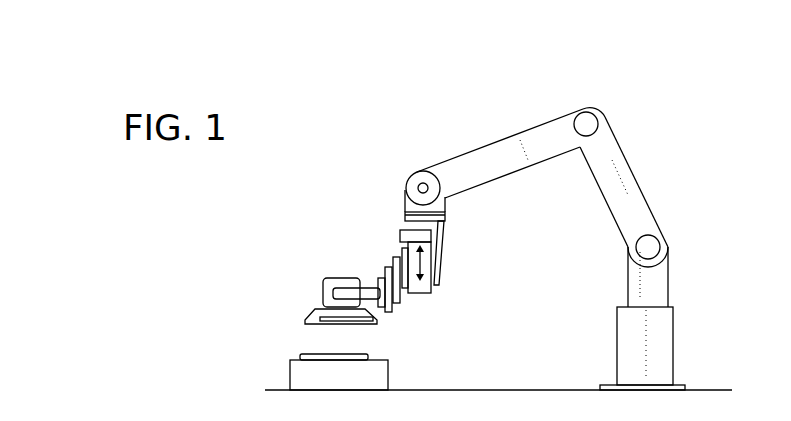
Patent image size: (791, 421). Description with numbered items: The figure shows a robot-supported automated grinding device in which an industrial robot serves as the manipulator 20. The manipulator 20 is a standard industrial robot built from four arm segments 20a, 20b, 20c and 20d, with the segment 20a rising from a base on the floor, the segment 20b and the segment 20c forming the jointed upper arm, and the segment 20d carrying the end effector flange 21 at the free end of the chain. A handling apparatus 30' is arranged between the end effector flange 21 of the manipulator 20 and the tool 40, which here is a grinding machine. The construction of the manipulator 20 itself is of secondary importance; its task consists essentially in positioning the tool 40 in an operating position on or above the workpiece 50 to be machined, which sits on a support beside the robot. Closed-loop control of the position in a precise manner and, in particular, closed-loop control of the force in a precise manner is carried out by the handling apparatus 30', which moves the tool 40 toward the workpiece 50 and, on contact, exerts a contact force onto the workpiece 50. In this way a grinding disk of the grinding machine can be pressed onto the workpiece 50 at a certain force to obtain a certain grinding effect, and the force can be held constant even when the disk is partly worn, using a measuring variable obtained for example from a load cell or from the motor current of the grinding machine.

The manipulator 20 is at (428, 151).
The arm segment 20a is at (657, 282).
The arm segment 20b is at (638, 200).
The arm segment 20c is at (552, 124).
The arm segment 20d is at (445, 203).
The end effector flange 21 is at (405, 214).
The handling apparatus 30' is at (478, 273).
The tool 40 is at (322, 292).
The workpiece 50 is at (368, 355).